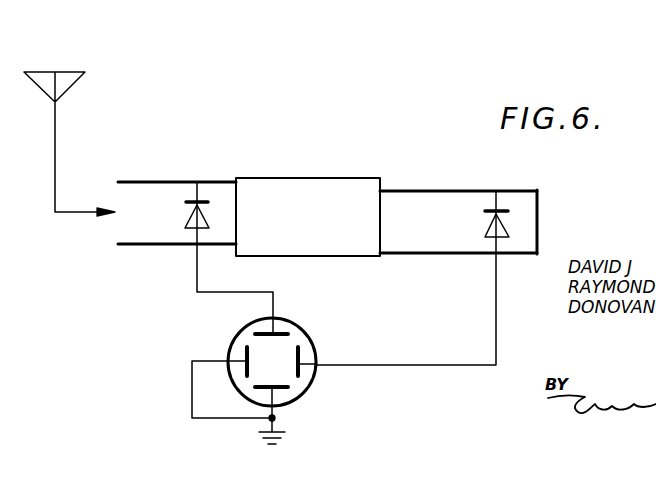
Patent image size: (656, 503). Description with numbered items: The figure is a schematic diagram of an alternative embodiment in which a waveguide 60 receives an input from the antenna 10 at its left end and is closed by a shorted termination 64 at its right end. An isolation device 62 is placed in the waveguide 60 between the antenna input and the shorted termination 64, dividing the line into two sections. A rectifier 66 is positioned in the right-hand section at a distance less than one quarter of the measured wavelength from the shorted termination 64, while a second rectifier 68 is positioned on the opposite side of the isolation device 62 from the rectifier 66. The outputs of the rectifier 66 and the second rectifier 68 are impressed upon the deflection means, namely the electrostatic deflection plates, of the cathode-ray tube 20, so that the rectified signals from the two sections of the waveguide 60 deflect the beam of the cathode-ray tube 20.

The antenna 10 is at (65, 70).
The second rectifier 68 is at (182, 220).
The isolation device 62 is at (309, 176).
The waveguide 60 is at (426, 191).
The shorted termination 64 is at (538, 203).
The rectifier 66 is at (484, 226).
The cathode-ray tube 20 is at (314, 340).